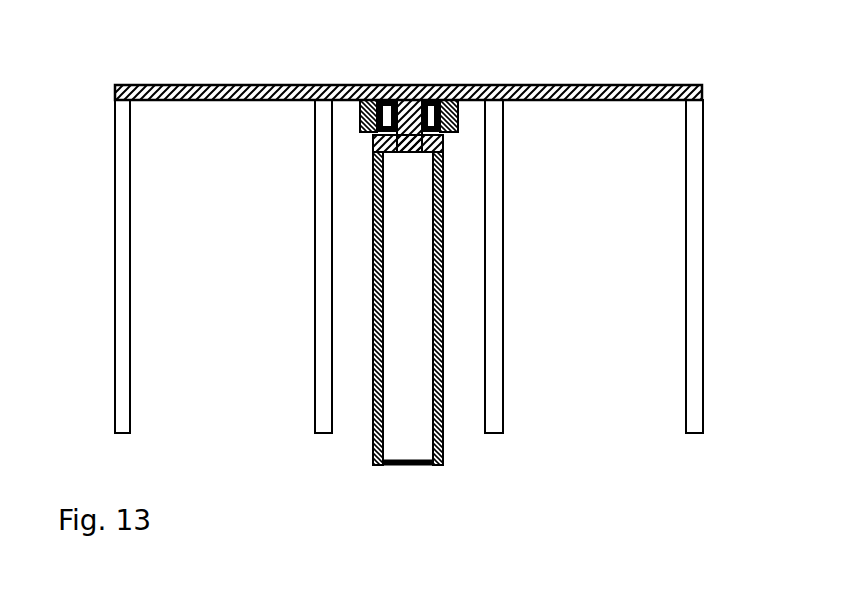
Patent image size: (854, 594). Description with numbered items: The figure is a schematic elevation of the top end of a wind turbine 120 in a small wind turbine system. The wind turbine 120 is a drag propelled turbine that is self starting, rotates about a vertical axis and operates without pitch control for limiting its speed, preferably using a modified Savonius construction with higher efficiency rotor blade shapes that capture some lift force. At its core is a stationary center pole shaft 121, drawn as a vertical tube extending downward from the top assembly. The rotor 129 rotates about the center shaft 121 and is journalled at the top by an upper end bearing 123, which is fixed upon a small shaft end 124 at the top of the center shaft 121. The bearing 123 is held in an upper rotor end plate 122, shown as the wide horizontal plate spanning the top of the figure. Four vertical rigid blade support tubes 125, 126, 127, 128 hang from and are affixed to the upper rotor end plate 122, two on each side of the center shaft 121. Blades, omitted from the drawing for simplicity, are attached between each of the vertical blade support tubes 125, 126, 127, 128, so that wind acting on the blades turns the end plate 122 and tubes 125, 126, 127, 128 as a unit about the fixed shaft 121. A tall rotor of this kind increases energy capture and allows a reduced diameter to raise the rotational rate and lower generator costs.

The wind turbine 120 is at (125, 50).
The stationary center pole shaft 121 is at (443, 448).
The upper rotor end plate 122 is at (568, 85).
The upper end bearing 123 is at (437, 107).
The small shaft end 124 is at (408, 107).
The vertical rigid blade support tube 125 is at (131, 318).
The vertical rigid blade support tube 126 is at (315, 322).
The vertical rigid blade support tube 127 is at (504, 290).
The vertical rigid blade support tube 128 is at (704, 285).
The rotor 129 is at (252, 76).